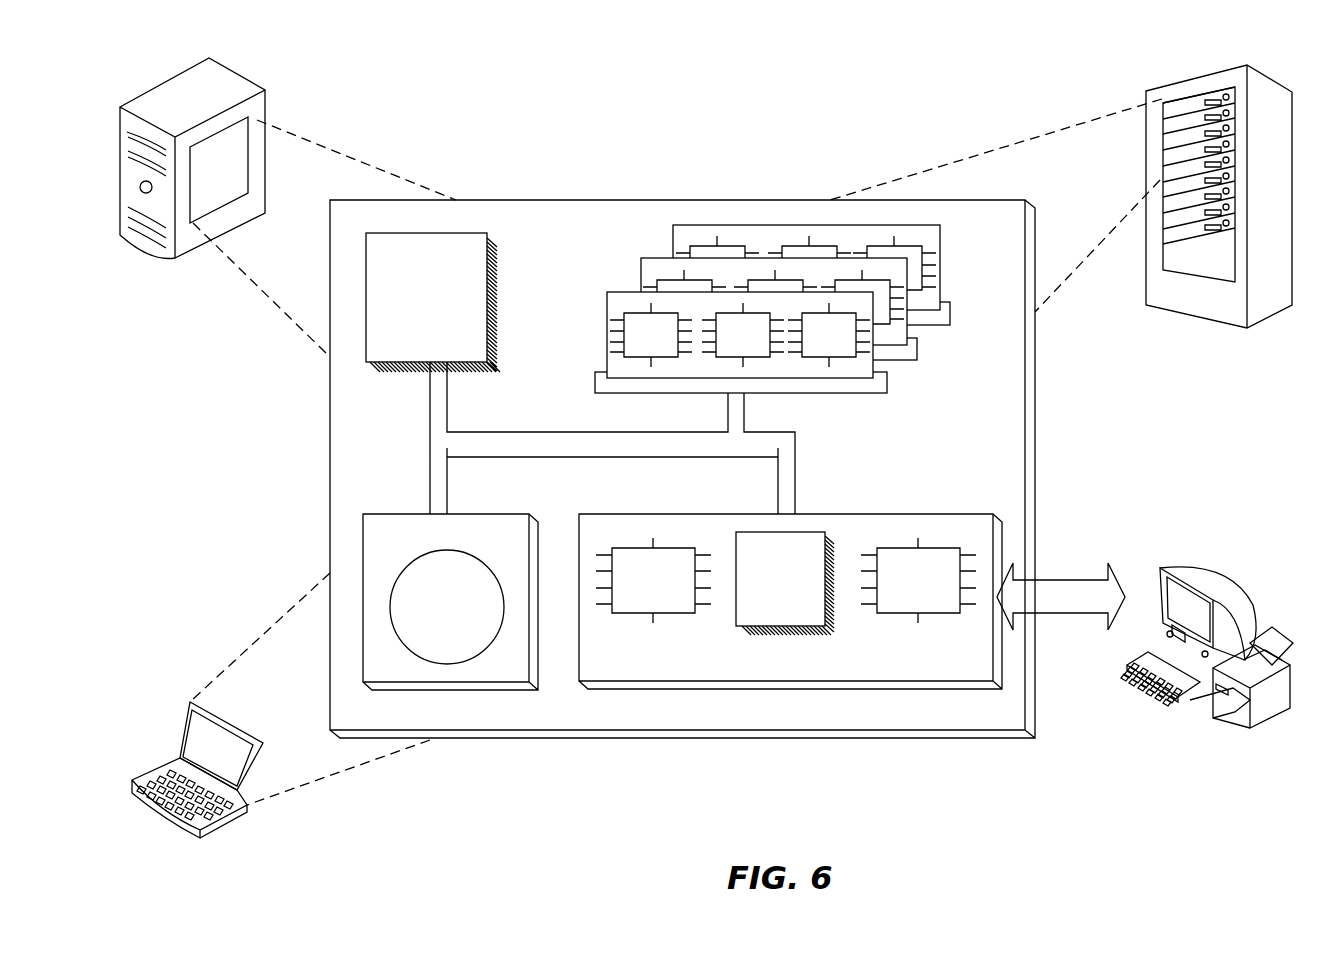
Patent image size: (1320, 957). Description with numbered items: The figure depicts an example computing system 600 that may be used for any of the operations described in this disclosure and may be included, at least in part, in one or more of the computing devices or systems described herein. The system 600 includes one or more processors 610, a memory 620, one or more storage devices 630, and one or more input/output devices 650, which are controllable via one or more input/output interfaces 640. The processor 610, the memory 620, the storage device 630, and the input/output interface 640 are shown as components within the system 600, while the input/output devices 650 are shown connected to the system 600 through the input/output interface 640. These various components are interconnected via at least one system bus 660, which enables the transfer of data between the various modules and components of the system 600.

The computing system 600 is at (516, 129).
The processor 610 is at (433, 302).
The memory 620 is at (944, 357).
The storage device 630 is at (450, 602).
The input/output interface 640 is at (790, 601).
The input/output device 650 is at (1158, 576).
The system bus 660 is at (612, 447).